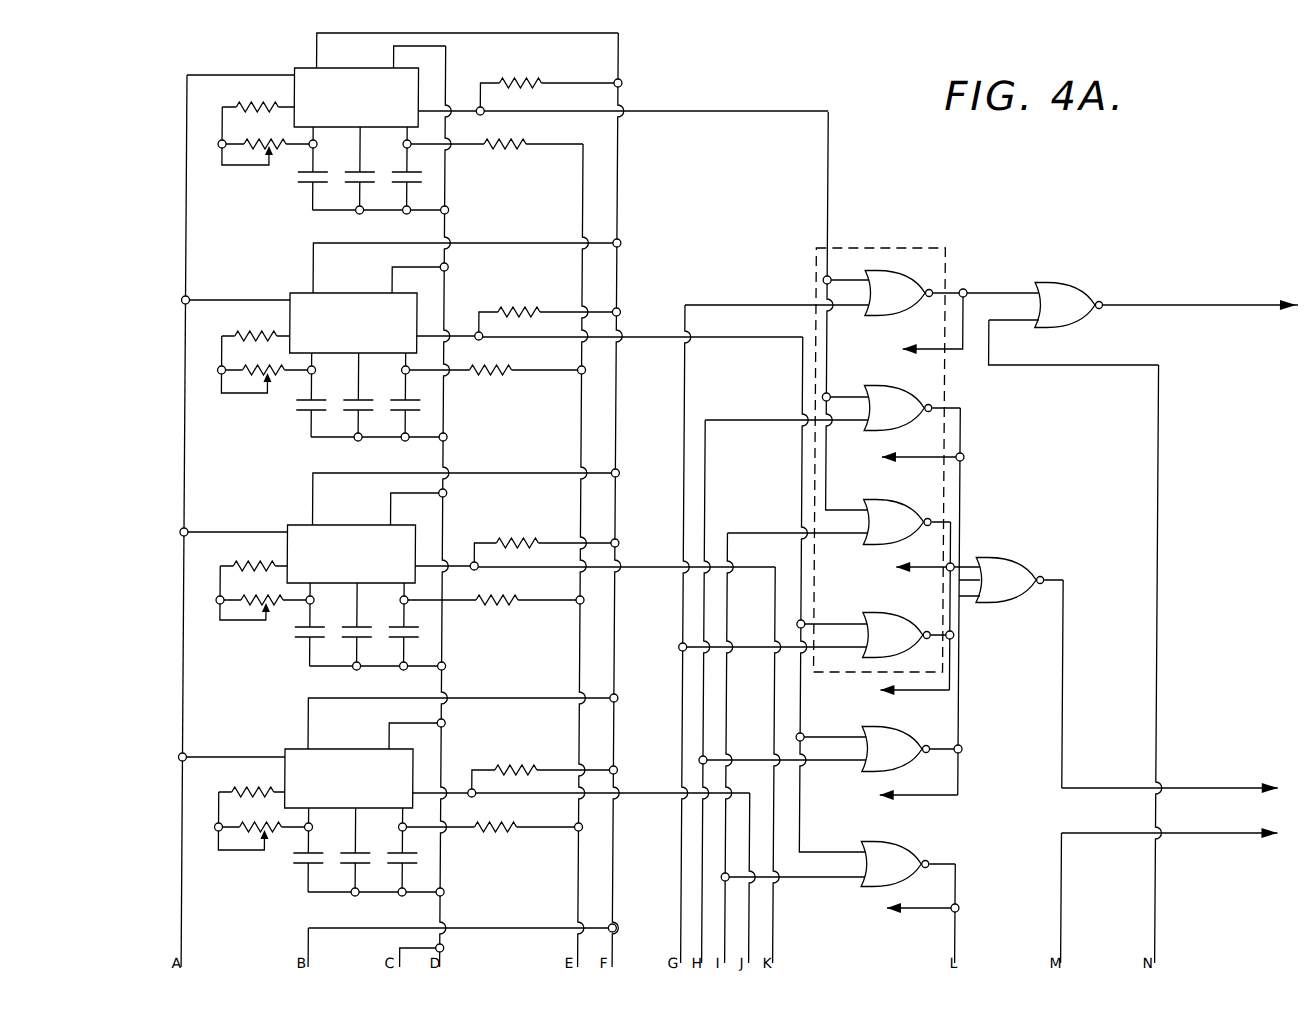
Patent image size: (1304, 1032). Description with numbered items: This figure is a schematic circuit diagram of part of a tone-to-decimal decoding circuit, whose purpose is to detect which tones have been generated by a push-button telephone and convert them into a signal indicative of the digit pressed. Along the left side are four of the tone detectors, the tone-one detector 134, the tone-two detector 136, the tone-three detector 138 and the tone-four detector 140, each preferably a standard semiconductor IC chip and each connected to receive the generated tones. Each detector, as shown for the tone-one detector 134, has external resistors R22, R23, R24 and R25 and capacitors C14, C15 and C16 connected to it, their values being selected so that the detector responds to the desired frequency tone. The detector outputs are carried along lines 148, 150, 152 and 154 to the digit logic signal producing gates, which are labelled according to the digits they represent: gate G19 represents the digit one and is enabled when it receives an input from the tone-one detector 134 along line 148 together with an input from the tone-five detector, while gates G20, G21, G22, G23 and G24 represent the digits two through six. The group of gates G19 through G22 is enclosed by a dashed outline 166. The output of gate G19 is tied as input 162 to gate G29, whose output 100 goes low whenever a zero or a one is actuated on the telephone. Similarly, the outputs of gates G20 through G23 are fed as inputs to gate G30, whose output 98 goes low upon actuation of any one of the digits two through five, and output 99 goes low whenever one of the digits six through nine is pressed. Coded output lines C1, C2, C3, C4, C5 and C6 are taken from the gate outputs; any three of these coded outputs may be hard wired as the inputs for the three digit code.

The tone #1 detector 134 is at (300, 68).
The tone #2 detector 136 is at (296, 293).
The tone #3 detector 138 is at (294, 525).
The tone #4 detector 140 is at (292, 749).
The resistor R22 is at (263, 105).
The resistor R23 is at (266, 130).
The resistor R24 is at (524, 86).
The resistor R25 is at (500, 144).
The capacitor C14 is at (305, 184).
The capacitor C15 is at (368, 172).
The capacitor C16 is at (408, 178).
The line 148 is at (690, 112).
The line 150 is at (645, 337).
The line 152 is at (635, 567).
The line 154 is at (637, 793).
The gate group (dashed enclosure) 166 is at (902, 248).
The input 162 is at (988, 293).
The output 100 is at (1232, 312).
The output 98 is at (1220, 788).
The output 99 is at (1210, 834).
The gate G19 is at (895, 276).
The gate G20 is at (893, 388).
The gate G21 is at (900, 492).
The gate G22 is at (892, 613).
The gate G23 is at (896, 728).
The gate G24 is at (902, 842).
The gate G29 is at (1074, 282).
The gate G30 is at (1018, 558).
The coded output line C1 is at (957, 349).
The coded output line C2 is at (898, 453).
The coded output line C3 is at (896, 569).
The coded output line C4 is at (881, 690).
The coded output line C5 is at (900, 792).
The coded output line C6 is at (891, 906).